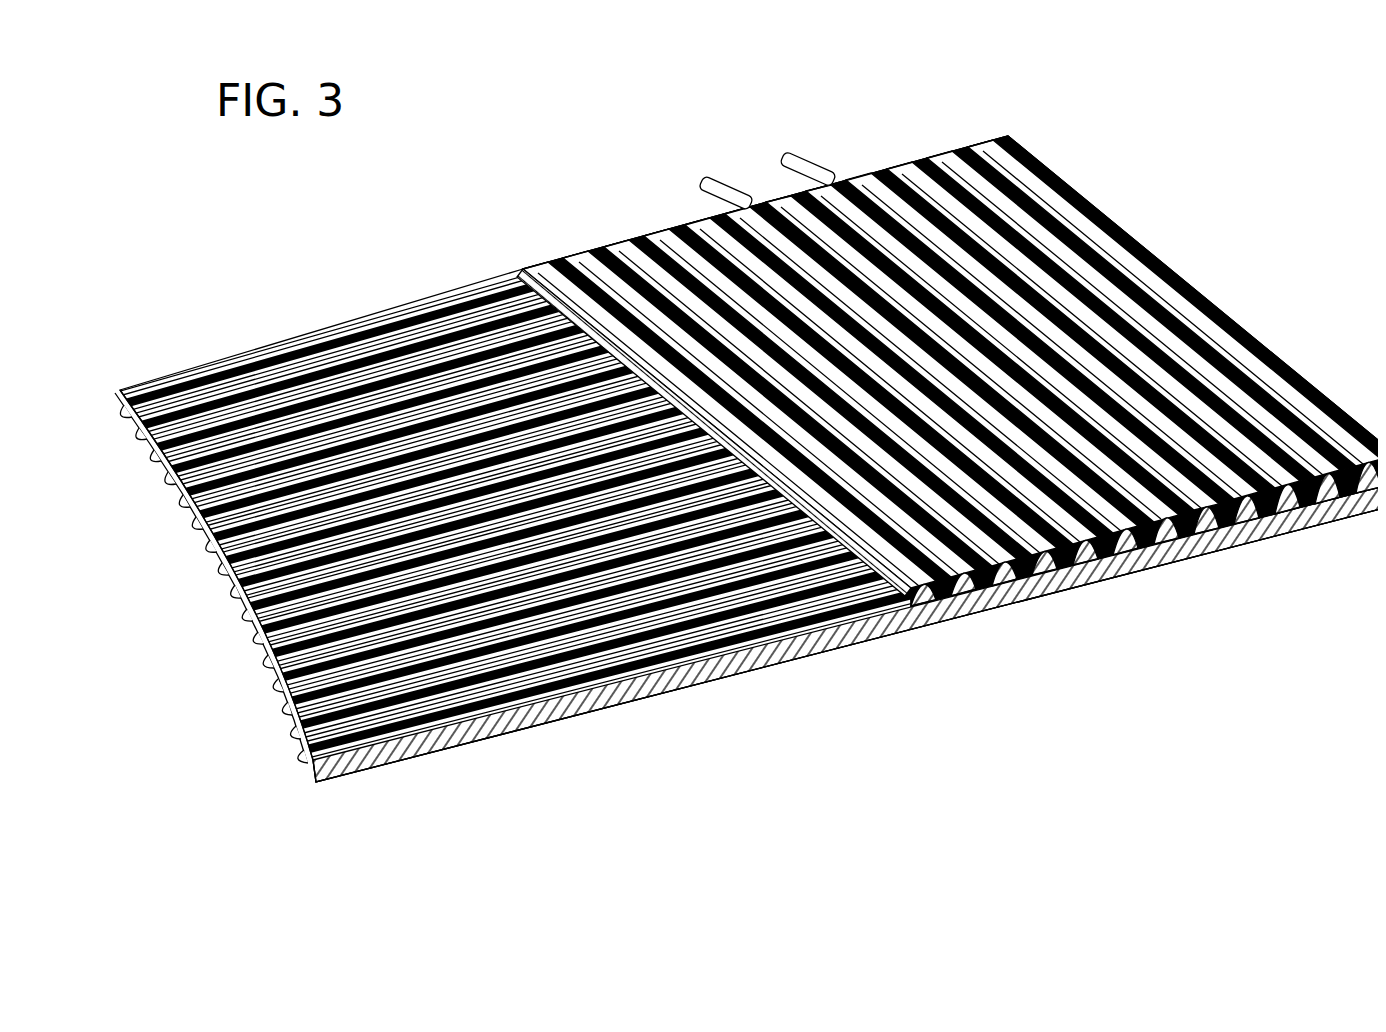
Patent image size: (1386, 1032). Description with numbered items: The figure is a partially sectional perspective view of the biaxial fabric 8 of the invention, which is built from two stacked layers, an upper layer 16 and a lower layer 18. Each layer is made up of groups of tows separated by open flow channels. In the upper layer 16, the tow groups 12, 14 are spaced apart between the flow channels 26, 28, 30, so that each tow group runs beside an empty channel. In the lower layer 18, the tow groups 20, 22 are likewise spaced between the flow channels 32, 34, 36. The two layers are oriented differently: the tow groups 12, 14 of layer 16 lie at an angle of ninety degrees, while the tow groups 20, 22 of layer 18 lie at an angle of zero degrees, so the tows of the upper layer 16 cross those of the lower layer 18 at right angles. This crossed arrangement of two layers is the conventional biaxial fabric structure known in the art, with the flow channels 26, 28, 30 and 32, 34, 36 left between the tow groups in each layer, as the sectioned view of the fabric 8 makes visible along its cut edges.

The biaxial fabric 8 is at (1165, 175).
The tow group 12 is at (697, 170).
The tow group 14 is at (778, 152).
The layer 16 is at (513, 265).
The layer 18 is at (1112, 566).
The tow group 20 is at (297, 733).
The tow group 22 is at (263, 657).
The flow channel 26 is at (1264, 385).
The flow channel 28 is at (872, 163).
The flow channel 30 is at (629, 229).
The flow channel 32 is at (300, 738).
The flow channel 34 is at (287, 705).
The flow channel 36 is at (233, 587).